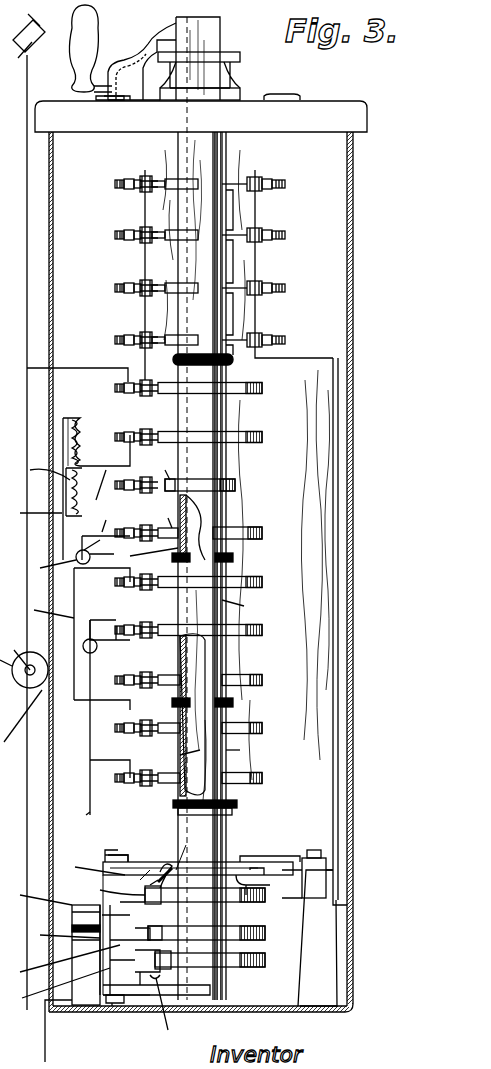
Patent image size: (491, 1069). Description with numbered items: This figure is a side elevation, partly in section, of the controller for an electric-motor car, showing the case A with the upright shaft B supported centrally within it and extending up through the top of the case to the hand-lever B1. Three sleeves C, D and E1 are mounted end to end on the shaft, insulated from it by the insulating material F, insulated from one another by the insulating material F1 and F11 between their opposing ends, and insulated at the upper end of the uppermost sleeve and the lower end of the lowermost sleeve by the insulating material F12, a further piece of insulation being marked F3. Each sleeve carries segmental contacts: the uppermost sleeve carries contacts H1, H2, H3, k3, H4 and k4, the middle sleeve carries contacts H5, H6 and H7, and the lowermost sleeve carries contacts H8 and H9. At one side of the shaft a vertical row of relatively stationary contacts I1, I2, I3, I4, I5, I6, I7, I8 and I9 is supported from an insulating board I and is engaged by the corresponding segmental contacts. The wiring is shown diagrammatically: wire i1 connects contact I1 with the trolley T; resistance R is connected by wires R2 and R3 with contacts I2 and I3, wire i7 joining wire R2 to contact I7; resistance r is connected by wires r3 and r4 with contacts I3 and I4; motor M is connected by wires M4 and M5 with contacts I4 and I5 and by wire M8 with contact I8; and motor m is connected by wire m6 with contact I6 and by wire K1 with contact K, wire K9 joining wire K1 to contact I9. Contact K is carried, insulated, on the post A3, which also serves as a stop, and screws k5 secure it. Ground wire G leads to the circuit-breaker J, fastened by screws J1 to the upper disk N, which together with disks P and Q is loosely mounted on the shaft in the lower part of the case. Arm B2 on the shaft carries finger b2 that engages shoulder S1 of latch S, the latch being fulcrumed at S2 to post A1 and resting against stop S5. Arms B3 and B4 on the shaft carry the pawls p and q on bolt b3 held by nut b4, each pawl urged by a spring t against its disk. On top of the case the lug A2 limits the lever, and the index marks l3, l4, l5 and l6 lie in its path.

The controller-case A is at (353, 225).
The stationary post or lug A1 is at (317, 938).
The lug A2 is at (136, 66).
The lug or post A3 is at (108, 950).
The upright shaft B is at (213, 272).
The hand-lever B1 is at (172, 22).
The laterally-extending arm B2 is at (275, 855).
The laterally-extending arm B3 is at (146, 862).
The laterally-extending arm B4 is at (150, 988).
The laterally-projecting finger b2 is at (266, 867).
The bolt b3 is at (116, 855).
The nut b4 is at (108, 1006).
The uppermost sleeve C is at (224, 470).
The middle sleeve D is at (241, 612).
The lowermost sleeve E1 is at (243, 757).
The insulating substance or material F is at (176, 757).
The insulating substance or material F1 is at (180, 650).
The insulating substance or material F11 is at (233, 558).
The collar F3 is at (145, 553).
The insulating substance or material F12 is at (235, 372).
The ground wire G is at (55, 1031).
The segmental contact H1 is at (262, 392).
The segmental contact H2 is at (262, 437).
The segmental contact H3 is at (235, 485).
The segmental contact H4 is at (262, 533).
The segmental contact H5 is at (262, 582).
The segmental contact H6 is at (262, 630).
The segmental contact H7 is at (262, 683).
The segmental contact H8 is at (262, 728).
The segmental contact H9 is at (262, 778).
The board I is at (322, 810).
The relatively stationary contact I1 is at (114, 392).
The relatively stationary contact I2 is at (114, 442).
The relatively stationary contact I3 is at (114, 490).
The relatively stationary contact I4 is at (114, 538).
The relatively stationary contact I5 is at (114, 586).
The relatively stationary contact I6 is at (114, 634).
The relatively stationary contact I7 is at (114, 683).
The relatively stationary contact I8 is at (114, 735).
The relatively stationary contact I9 is at (114, 782).
The wire i1 is at (180, 276).
The wire i7 is at (31, 513).
The circuit-breaker J is at (74, 936).
The screws J1 is at (176, 862).
The contact K is at (72, 910).
The wire K1 is at (77, 816).
The wire K9 is at (106, 772).
The segmental contact k3 is at (165, 468).
The segmental contact k4 is at (167, 516).
The screws k5 is at (36, 894).
The lug or index-mark l3 is at (296, 98).
The lug or index-mark l4 is at (236, 96).
The lug or index-mark l5 is at (170, 96).
The lug or index-mark l6 is at (110, 100).
The motor M is at (47, 568).
The wire M4 is at (95, 546).
The wire M5 is at (108, 583).
The wire M8 is at (41, 611).
The motor m is at (104, 646).
The wire m6 is at (122, 610).
The upper disk N is at (265, 895).
The middle disk P is at (265, 933).
The lower disk Q is at (265, 960).
The pawl p is at (60, 967).
The pawl q is at (57, 990).
The resistance R is at (66, 428).
The wire R2 is at (104, 430).
The wire R3 is at (100, 476).
The resistance r is at (38, 470).
The wire r3 is at (98, 487).
The wire r4 is at (106, 531).
The latch S is at (318, 885).
The shoulder S1 is at (322, 854).
The fulcrum S2 is at (24, 660).
The stationary pin or stop S5 is at (21, 716).
The trolley or contact device T is at (25, 512).
The spring t is at (116, 953).